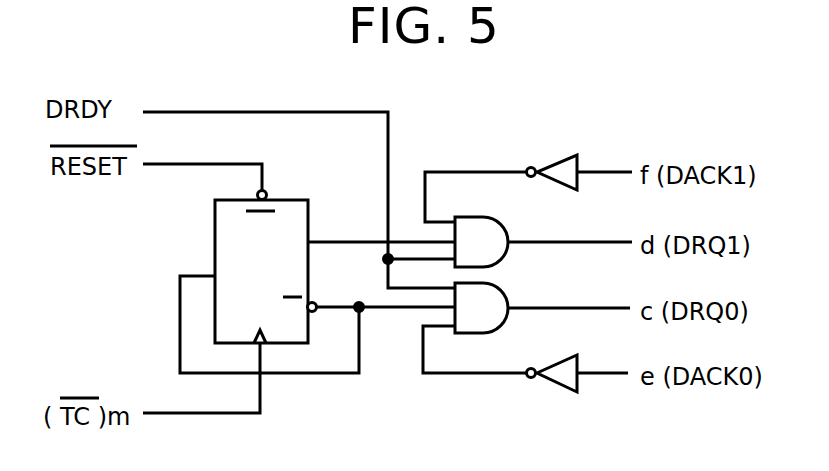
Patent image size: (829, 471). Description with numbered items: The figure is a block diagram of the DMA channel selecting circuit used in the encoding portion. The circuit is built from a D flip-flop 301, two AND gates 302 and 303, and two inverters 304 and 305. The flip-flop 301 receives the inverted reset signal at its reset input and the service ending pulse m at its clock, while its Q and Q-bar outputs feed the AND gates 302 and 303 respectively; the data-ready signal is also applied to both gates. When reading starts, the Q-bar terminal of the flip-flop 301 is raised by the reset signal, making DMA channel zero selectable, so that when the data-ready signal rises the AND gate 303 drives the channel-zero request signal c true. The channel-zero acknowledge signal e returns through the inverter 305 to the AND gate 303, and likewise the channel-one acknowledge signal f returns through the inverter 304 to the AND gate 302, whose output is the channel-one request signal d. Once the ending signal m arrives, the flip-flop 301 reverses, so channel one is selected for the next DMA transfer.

The D flip-flop 301 is at (292, 200).
The AND gate 302 is at (496, 219).
The AND gate 303 is at (500, 289).
The inverter 304 is at (560, 155).
The inverter 305 is at (553, 392).